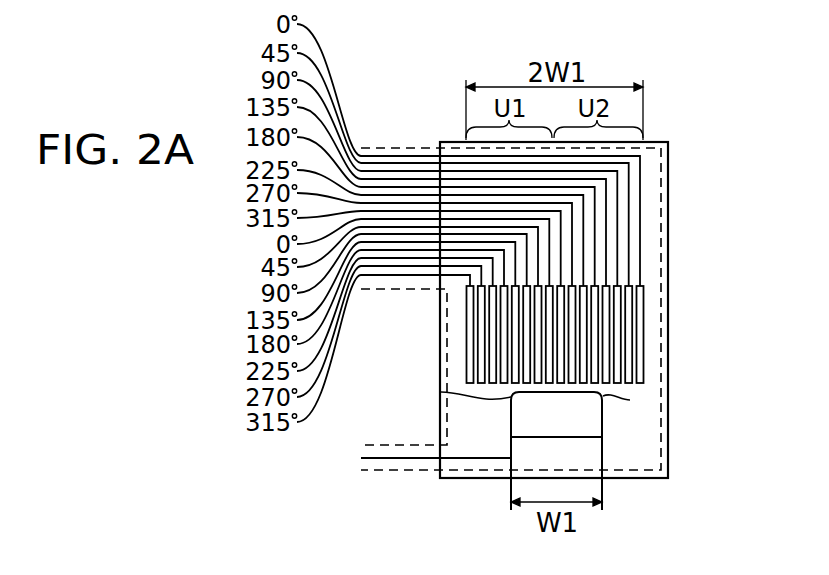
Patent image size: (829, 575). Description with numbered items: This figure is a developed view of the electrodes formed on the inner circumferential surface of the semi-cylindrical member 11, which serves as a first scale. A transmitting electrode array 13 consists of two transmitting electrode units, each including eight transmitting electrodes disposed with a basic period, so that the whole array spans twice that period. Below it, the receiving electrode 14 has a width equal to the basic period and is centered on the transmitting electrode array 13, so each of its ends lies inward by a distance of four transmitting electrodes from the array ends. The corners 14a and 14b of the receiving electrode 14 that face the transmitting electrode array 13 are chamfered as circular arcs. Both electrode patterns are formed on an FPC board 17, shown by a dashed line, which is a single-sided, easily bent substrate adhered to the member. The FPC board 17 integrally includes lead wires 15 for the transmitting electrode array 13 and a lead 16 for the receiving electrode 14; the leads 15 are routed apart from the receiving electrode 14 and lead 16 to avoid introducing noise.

The semi-cylindrical member 11 is at (668, 190).
The transmitting electrode array 13 is at (644, 347).
The receiving electrode 14 is at (593, 418).
The corner 14a is at (630, 400).
The corner 14b is at (441, 392).
The lead wires 15 is at (373, 180).
The lead wire 16 is at (374, 457).
The FPC board 17 is at (412, 147).